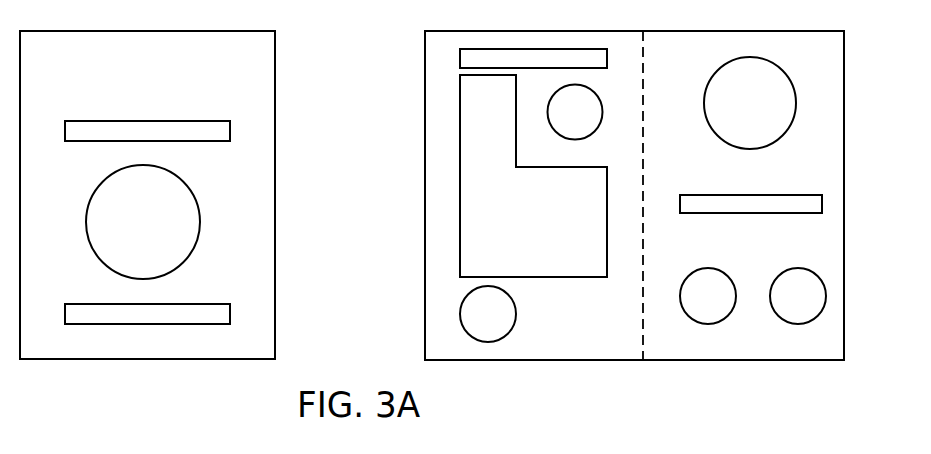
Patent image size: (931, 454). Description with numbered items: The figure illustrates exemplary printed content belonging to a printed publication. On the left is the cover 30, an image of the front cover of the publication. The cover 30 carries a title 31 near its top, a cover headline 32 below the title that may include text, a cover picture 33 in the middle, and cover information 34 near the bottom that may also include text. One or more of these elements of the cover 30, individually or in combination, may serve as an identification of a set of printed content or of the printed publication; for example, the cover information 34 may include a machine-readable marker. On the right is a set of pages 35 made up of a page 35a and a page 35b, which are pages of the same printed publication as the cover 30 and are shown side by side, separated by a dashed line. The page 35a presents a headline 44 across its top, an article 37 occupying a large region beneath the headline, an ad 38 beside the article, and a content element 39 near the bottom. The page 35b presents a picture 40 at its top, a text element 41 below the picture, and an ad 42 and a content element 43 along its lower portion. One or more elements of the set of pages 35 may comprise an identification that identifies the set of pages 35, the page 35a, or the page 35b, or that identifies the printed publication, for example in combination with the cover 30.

The cover 30 is at (175, 214).
The title 31 is at (206, 71).
The cover headline 32 is at (234, 128).
The cover picture 33 is at (205, 219).
The cover information 34 is at (236, 308).
The set of pages 35 is at (421, 294).
The page 35a is at (554, 364).
The page 35b is at (745, 363).
The article 37 is at (533, 176).
The ad 38 is at (575, 112).
The content element 39 is at (488, 314).
The picture 40 is at (750, 103).
The text element 41 is at (775, 204).
The ad 42 is at (708, 296).
The content element 43 is at (798, 296).
The headline 44 is at (496, 58).